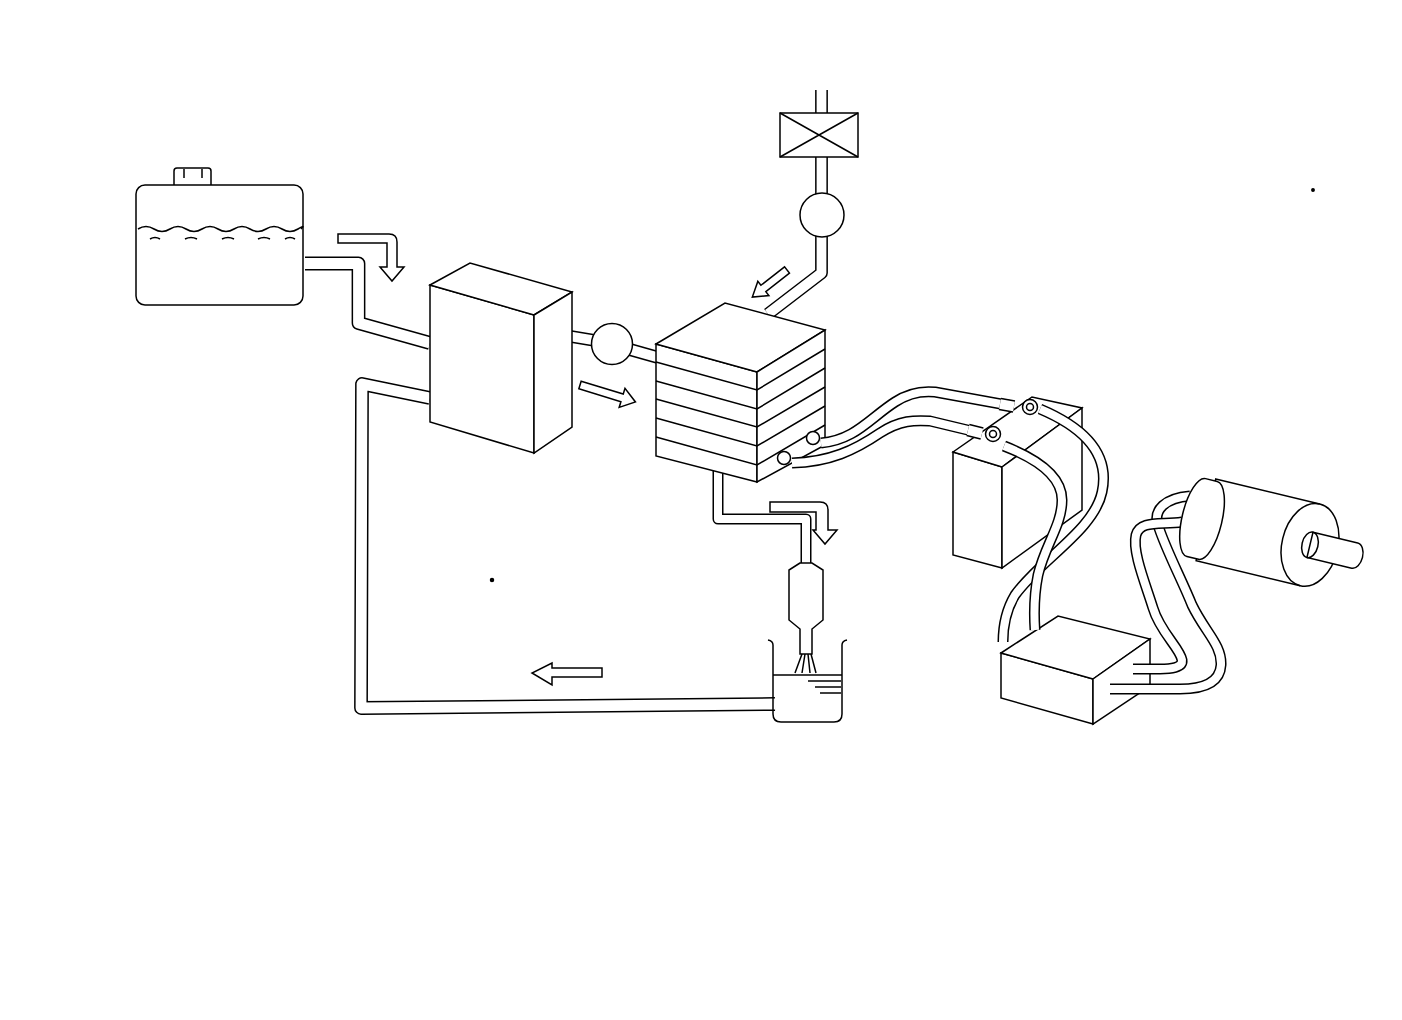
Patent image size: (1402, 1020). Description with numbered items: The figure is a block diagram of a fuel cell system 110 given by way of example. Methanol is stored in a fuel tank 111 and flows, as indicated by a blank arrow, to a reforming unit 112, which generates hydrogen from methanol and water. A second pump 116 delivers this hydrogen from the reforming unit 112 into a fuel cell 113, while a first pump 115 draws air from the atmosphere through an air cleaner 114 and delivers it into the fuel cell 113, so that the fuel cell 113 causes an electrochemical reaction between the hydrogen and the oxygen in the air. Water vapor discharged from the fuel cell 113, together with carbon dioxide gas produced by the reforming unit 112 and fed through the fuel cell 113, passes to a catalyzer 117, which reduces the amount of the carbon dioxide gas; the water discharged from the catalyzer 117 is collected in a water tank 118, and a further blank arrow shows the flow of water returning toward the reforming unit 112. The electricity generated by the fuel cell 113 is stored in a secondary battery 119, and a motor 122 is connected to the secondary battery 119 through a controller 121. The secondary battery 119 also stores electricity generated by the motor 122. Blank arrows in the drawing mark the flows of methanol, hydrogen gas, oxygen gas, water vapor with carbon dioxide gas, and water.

The fuel cell system 110 is at (1132, 128).
The fuel tank 111 is at (240, 184).
The reforming unit 112 is at (500, 268).
The fuel cell 113 is at (810, 322).
The air cleaner 114 is at (860, 132).
The first pump 115 is at (845, 213).
The second pump 116 is at (618, 323).
The catalyzer 117 is at (826, 588).
The water tank 118 is at (843, 655).
The secondary battery 119 is at (1062, 400).
The controller 121 is at (1012, 700).
The motor 122 is at (1268, 486).